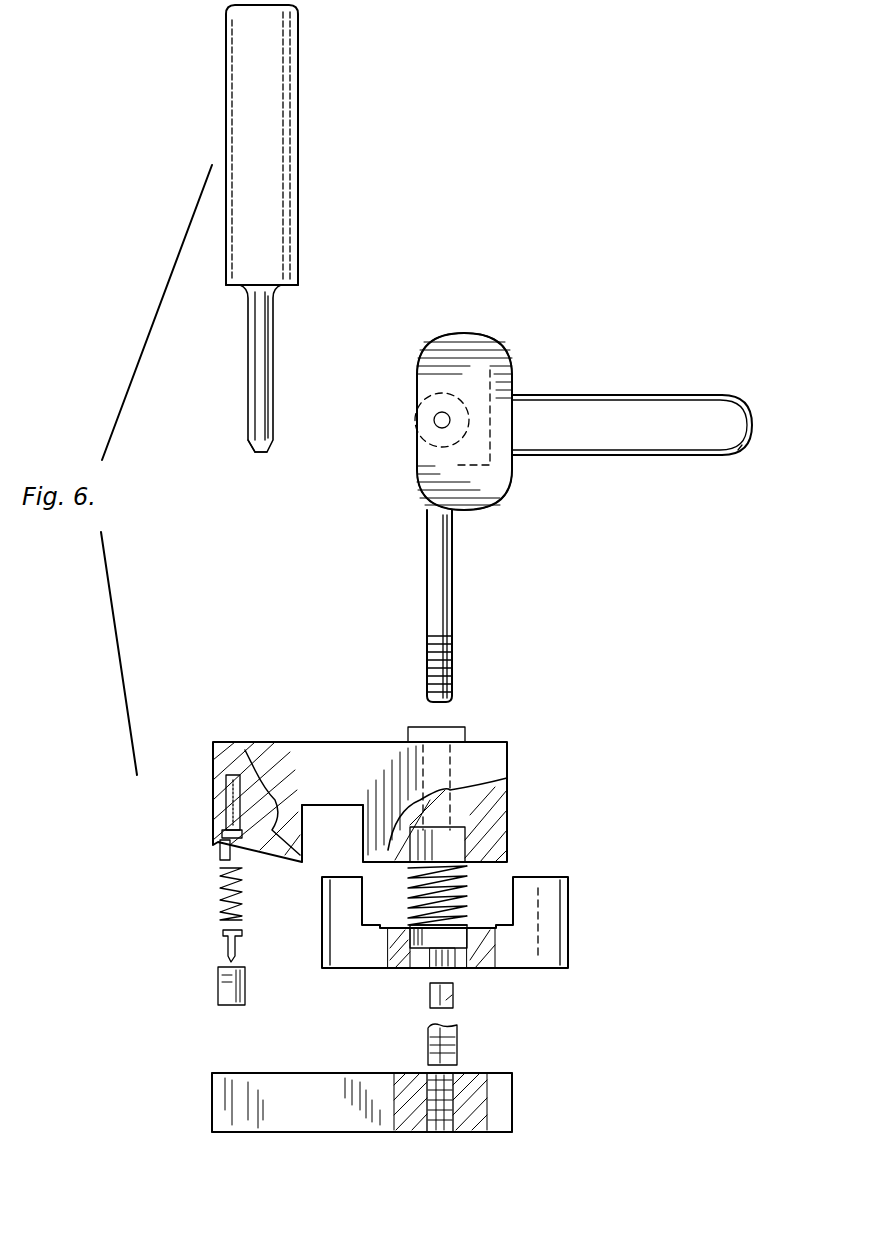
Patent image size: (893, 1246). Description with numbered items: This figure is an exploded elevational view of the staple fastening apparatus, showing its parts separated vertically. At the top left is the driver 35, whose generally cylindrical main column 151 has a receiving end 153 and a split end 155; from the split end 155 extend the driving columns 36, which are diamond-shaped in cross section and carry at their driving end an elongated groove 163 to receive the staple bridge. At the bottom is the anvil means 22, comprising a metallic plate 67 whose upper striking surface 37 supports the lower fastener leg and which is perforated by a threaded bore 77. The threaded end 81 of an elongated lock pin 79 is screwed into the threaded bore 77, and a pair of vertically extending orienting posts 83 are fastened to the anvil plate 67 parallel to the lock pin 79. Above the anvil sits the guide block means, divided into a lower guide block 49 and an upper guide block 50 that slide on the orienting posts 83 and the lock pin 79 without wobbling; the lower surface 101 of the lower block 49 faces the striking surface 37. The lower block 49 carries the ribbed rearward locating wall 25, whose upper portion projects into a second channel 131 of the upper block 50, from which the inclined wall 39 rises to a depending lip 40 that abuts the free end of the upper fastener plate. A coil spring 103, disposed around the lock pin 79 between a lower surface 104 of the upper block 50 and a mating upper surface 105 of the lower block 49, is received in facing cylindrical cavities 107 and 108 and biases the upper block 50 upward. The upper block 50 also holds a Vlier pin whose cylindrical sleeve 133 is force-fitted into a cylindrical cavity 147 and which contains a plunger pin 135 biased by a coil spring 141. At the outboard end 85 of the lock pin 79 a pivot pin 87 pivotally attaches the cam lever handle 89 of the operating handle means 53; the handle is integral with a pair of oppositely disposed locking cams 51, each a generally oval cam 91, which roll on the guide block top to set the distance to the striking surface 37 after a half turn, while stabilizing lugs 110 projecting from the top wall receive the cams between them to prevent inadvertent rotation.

The anvil means 22 is at (321, 1109).
The rearward locating wall 25 is at (587, 930).
The driver 35 is at (270, 258).
The driving columns 36 is at (268, 448).
The striking surface 37 is at (285, 1048).
The inclined wall 39 is at (295, 835).
The depending lip 40 is at (217, 858).
The lower guide block 49 is at (458, 921).
The upper guide block 50 is at (368, 802).
The locking cams 51 is at (477, 365).
The operating handle means 53 is at (550, 492).
The metallic plate 67 is at (335, 1105).
The threaded bore 77 is at (445, 1118).
The lock pin 79 is at (452, 552).
The threaded end of lock pin 81 is at (452, 668).
The orienting posts 83 is at (455, 992).
The outboard end of lock pin 85 is at (414, 428).
The pivot pin 87 is at (434, 418).
The cam lever handle 89 is at (645, 360).
The oval cam 91 is at (470, 302).
The lower surface of lower portion 101 is at (545, 970).
The coil spring 103 is at (462, 910).
The lower surface of upper guide block portion 104 is at (495, 868).
The upper surface of lower guide block portion 105 is at (395, 922).
The cylindrical cavity 107 is at (412, 966).
The cylindrical cavity 108 is at (460, 835).
The stabilizing lugs 110 is at (462, 732).
The second channel 131 is at (360, 782).
The cylindrical sleeve 133 is at (218, 985).
The plunger pin 135 is at (227, 950).
The biasing coil spring 141 is at (243, 890).
The cylindrical cavity 147 is at (222, 832).
The main column 151 is at (226, 78).
The receiving end 153 is at (300, 62).
The split end 155 is at (275, 345).
The elongated groove 163 is at (258, 455).